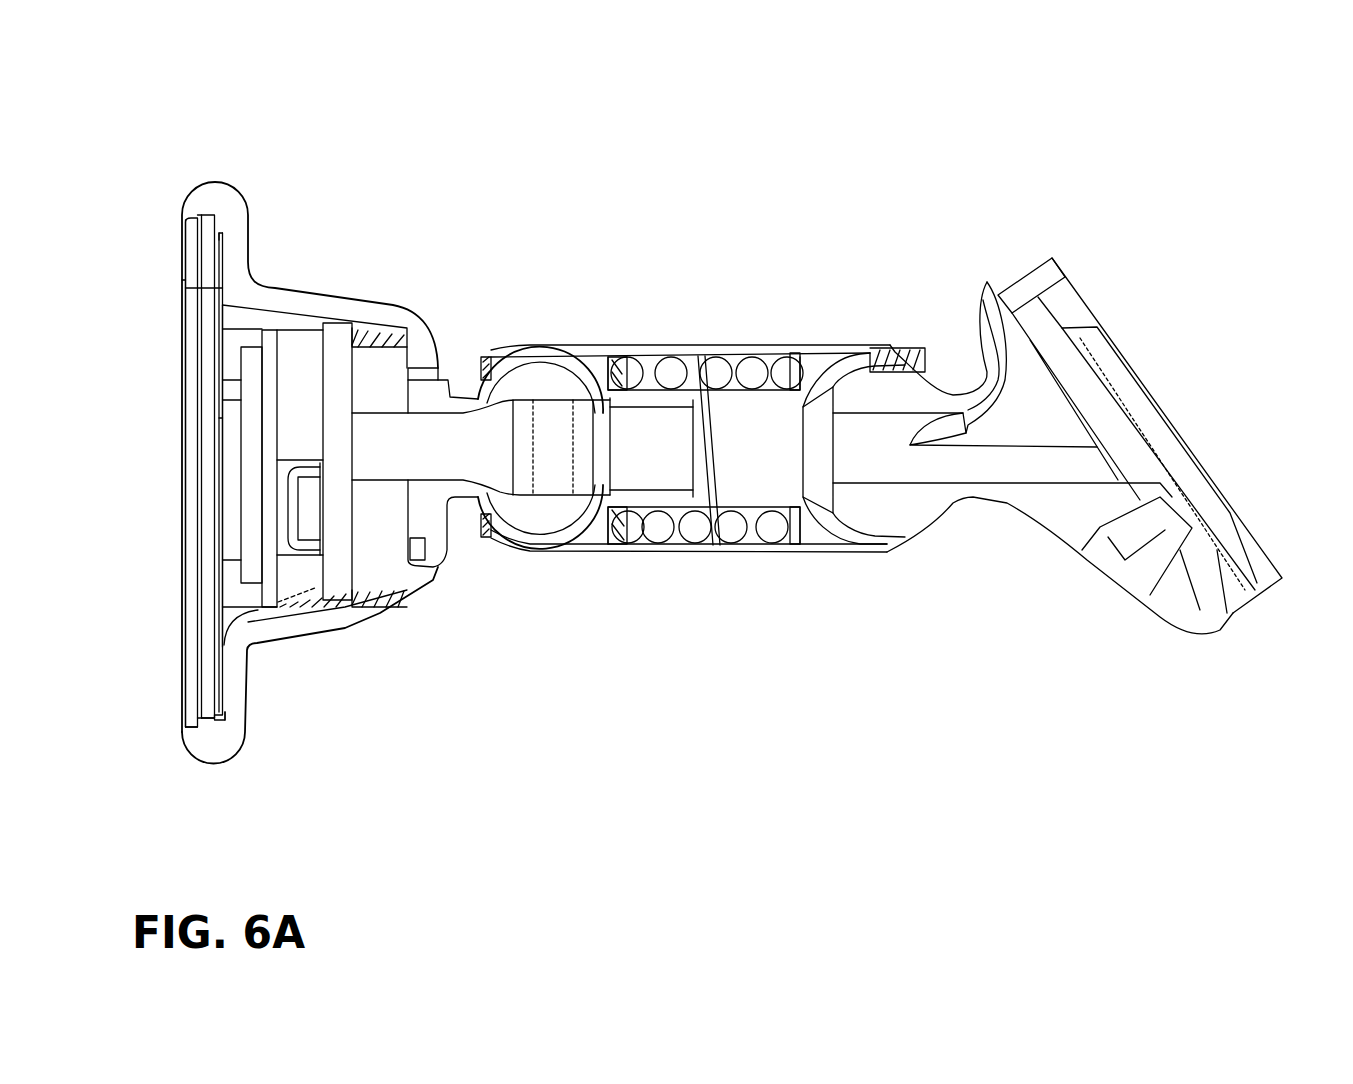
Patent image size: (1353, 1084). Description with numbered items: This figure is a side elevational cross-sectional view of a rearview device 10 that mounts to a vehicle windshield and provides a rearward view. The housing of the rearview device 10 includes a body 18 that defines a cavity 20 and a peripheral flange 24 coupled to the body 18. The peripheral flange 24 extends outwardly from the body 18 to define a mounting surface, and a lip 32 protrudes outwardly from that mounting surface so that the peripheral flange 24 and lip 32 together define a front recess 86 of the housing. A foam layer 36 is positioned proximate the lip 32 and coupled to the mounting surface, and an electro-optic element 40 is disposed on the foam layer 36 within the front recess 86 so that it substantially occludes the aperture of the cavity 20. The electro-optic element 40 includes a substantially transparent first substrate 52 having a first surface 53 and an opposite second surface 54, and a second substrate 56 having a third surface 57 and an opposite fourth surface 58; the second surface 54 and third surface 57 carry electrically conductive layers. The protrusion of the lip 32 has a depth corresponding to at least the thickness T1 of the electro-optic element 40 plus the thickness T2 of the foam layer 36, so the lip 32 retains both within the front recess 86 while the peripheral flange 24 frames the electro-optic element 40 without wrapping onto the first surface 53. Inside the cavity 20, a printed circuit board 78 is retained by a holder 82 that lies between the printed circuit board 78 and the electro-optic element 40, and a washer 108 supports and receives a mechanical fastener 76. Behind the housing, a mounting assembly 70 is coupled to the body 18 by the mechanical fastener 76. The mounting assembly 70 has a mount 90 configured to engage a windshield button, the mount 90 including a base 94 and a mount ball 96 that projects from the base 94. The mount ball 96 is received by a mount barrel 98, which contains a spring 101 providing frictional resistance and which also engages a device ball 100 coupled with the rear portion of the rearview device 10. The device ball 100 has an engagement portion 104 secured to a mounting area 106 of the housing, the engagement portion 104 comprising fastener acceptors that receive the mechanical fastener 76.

The rearview device 10 is at (395, 150).
The body 18 is at (347, 617).
The cavity 20 is at (297, 577).
The peripheral flange 24 is at (232, 732).
The lip 32 is at (210, 722).
The foam layer 36 is at (270, 360).
The electro-optic element 40 is at (177, 490).
The first substrate 52 is at (190, 322).
The first surface 53 is at (183, 430).
The second surface 54 is at (200, 463).
The second substrate 56 is at (208, 573).
The third surface 57 is at (207, 537).
The fourth surface 58 is at (210, 628).
The mounting assembly 70 is at (905, 265).
The mechanical fastener 76 is at (307, 527).
The printed circuit board 78 is at (337, 343).
The holder 82 is at (237, 380).
The front recess 86 is at (210, 217).
The mount 90 is at (982, 303).
The base 94 is at (1253, 547).
The mount ball 96 is at (887, 390).
The mount barrel 98 is at (713, 353).
The device ball 100 is at (540, 383).
The spring 101 is at (768, 530).
The engagement portion 104 is at (450, 537).
The mounting area 106 is at (440, 373).
The washer 108 is at (360, 327).
The thickness of the electro-optic element T1 is at (192, 280).
The thickness of the foam layer T2 is at (221, 418).